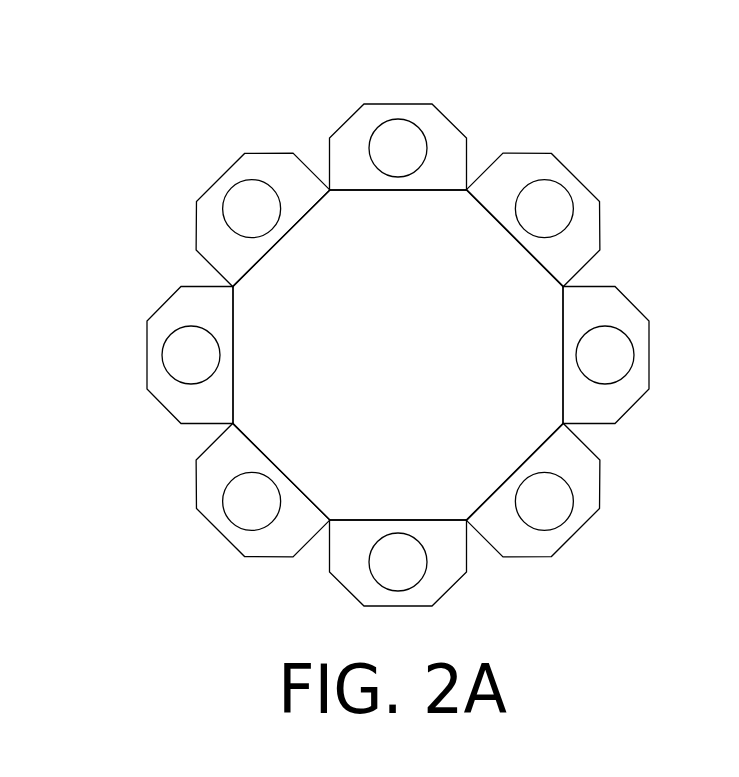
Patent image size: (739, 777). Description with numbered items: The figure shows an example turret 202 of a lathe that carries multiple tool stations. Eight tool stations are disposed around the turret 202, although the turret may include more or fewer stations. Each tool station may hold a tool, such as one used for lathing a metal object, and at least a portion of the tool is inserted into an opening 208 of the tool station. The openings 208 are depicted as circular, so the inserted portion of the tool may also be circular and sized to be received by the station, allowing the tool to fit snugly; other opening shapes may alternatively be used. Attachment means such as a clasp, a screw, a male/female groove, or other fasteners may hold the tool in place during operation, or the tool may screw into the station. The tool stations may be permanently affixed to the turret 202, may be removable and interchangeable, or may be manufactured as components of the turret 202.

The turret 202 is at (282, 118).
The opening 208 is at (458, 131).